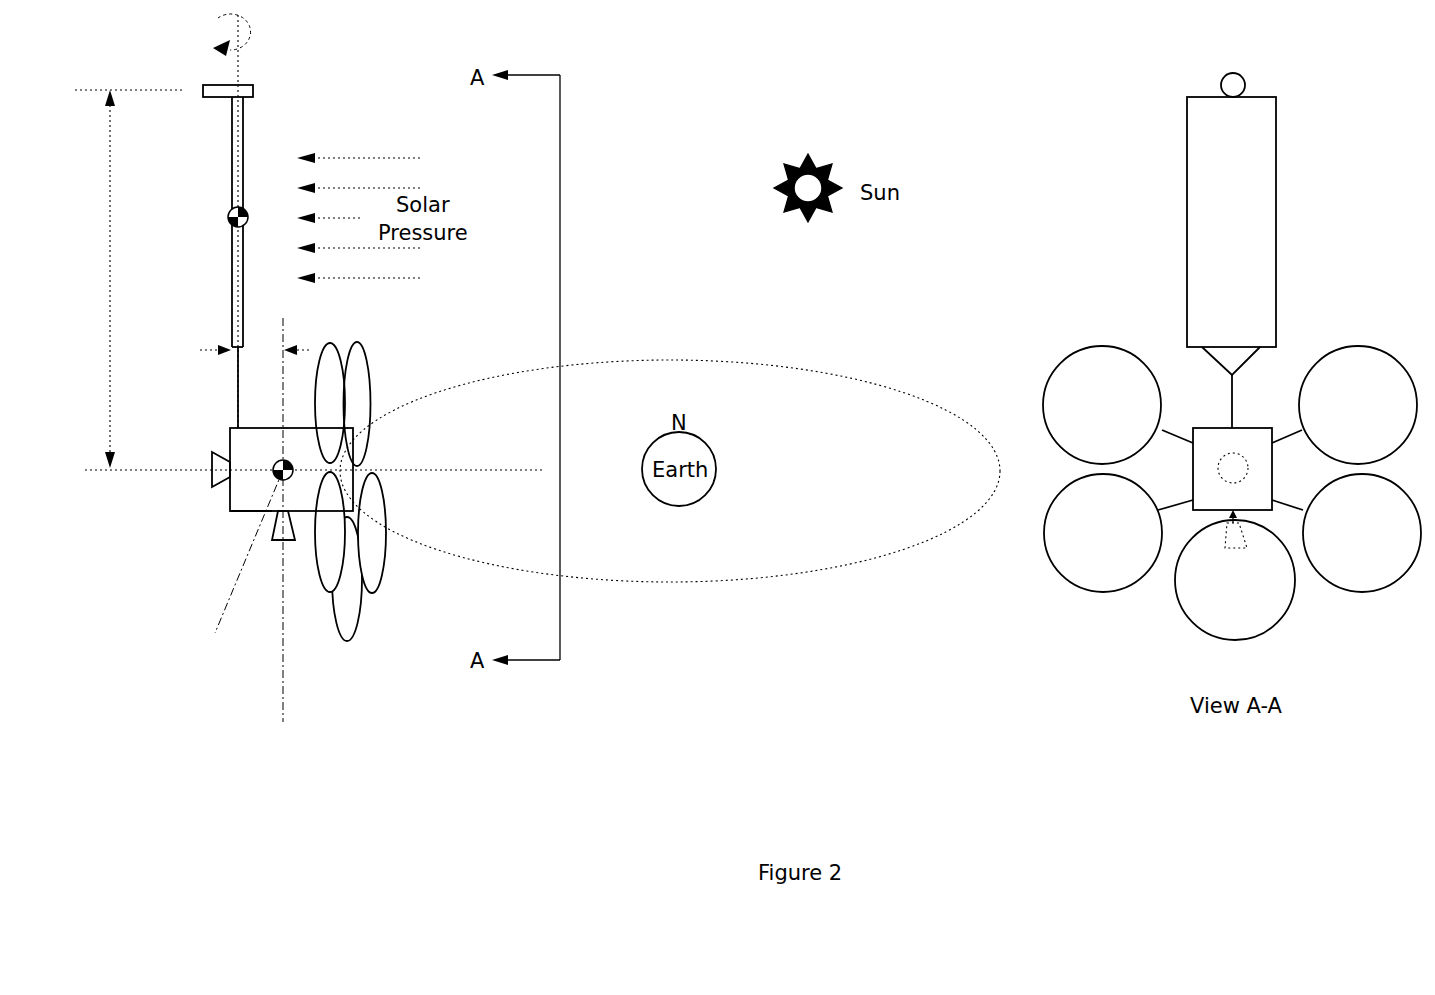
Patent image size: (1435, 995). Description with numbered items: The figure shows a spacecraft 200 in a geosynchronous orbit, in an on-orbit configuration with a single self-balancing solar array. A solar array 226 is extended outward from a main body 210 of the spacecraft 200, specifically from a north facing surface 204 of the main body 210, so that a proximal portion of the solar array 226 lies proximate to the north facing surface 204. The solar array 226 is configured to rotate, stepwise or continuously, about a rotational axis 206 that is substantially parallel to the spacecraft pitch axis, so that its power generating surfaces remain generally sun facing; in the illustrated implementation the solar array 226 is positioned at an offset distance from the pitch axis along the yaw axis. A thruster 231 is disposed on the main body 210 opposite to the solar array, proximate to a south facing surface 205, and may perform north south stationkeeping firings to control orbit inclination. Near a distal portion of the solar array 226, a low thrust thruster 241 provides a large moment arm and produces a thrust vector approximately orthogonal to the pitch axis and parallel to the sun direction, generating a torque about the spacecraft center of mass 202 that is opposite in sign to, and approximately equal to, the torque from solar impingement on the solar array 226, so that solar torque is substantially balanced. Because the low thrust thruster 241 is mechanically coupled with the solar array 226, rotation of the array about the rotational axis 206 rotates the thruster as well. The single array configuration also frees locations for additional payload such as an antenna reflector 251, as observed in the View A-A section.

The spacecraft 200 is at (130, 62).
The spacecraft center of mass 202 is at (278, 465).
The north facing surface 204 is at (265, 428).
The south facing surface 205 is at (247, 513).
The rotational axis 206 is at (246, 73).
The main body 210 is at (250, 487).
The solar array 226 is at (232, 137).
The thruster 231 is at (293, 540).
The low thrust thruster 241 is at (253, 91).
The antenna reflector 251 is at (1283, 620).